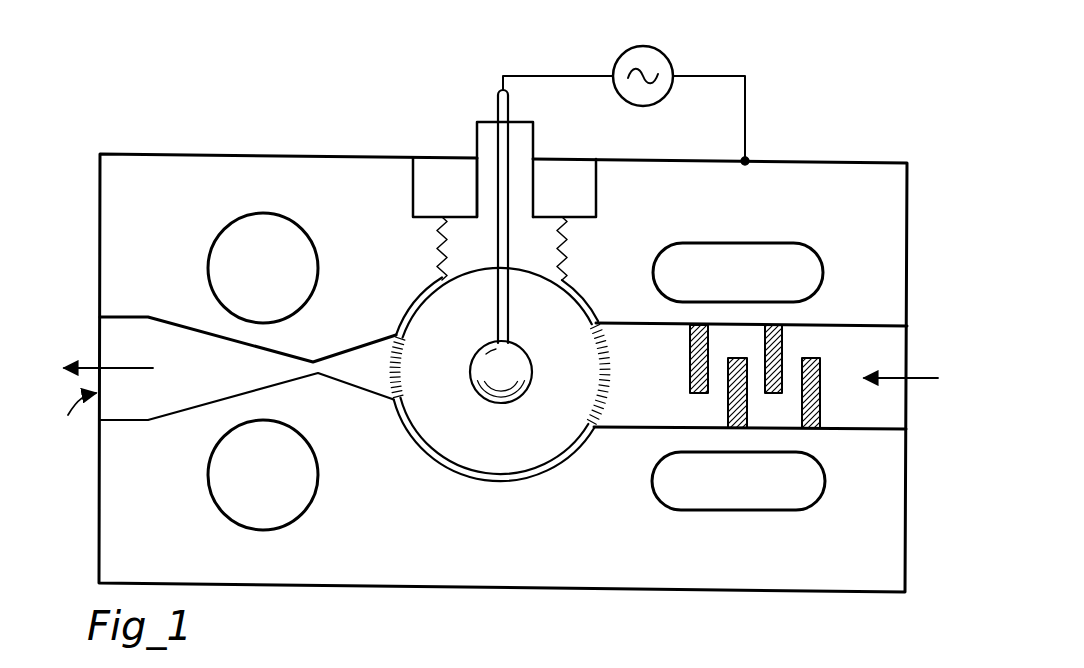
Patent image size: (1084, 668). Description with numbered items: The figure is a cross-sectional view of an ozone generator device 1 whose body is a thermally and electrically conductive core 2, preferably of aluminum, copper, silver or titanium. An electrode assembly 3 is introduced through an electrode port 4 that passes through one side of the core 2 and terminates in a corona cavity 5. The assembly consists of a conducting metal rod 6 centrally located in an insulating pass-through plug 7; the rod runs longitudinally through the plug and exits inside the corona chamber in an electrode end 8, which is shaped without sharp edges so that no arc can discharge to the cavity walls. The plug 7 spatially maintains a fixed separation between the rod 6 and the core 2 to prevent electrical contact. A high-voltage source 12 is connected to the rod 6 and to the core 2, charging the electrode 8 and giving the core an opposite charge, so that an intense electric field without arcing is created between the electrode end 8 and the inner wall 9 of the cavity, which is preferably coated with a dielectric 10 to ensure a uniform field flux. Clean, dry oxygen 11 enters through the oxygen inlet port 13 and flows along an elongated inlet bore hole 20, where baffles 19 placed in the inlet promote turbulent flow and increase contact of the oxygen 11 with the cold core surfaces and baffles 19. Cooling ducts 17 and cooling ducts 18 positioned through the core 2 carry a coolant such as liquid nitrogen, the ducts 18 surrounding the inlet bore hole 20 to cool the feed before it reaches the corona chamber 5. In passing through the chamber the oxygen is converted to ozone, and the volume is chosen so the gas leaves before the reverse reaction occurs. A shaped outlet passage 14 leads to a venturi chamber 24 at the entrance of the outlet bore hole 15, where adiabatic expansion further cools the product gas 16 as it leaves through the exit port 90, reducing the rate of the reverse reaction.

The ozone generator device 1 is at (820, 151).
The core 2 is at (858, 214).
The electrode assembly 3 is at (460, 151).
The electrode port 4 is at (552, 201).
The corona cavity 5 is at (438, 337).
The metal rod 6 is at (497, 102).
The insulating pass-through plug 7 is at (533, 165).
The electrode end 8 is at (523, 352).
The inner wall of the cavity 9 is at (425, 443).
The dielectric 10 is at (547, 460).
The oxygen 11 is at (937, 383).
The high-voltage source 12 is at (662, 57).
The oxygen inlet port 13 is at (908, 332).
The shaped outlet passage 14 is at (356, 350).
The outlet bore hole 15 is at (122, 318).
The product gas 16 is at (93, 368).
The cooling ducts 17 is at (253, 283).
The cooling ducts 18 is at (728, 287).
The baffles 19 is at (783, 344).
The inlet bore hole 20 is at (641, 426).
The venturi chamber 24 is at (193, 382).
The exit port 90 is at (72, 417).